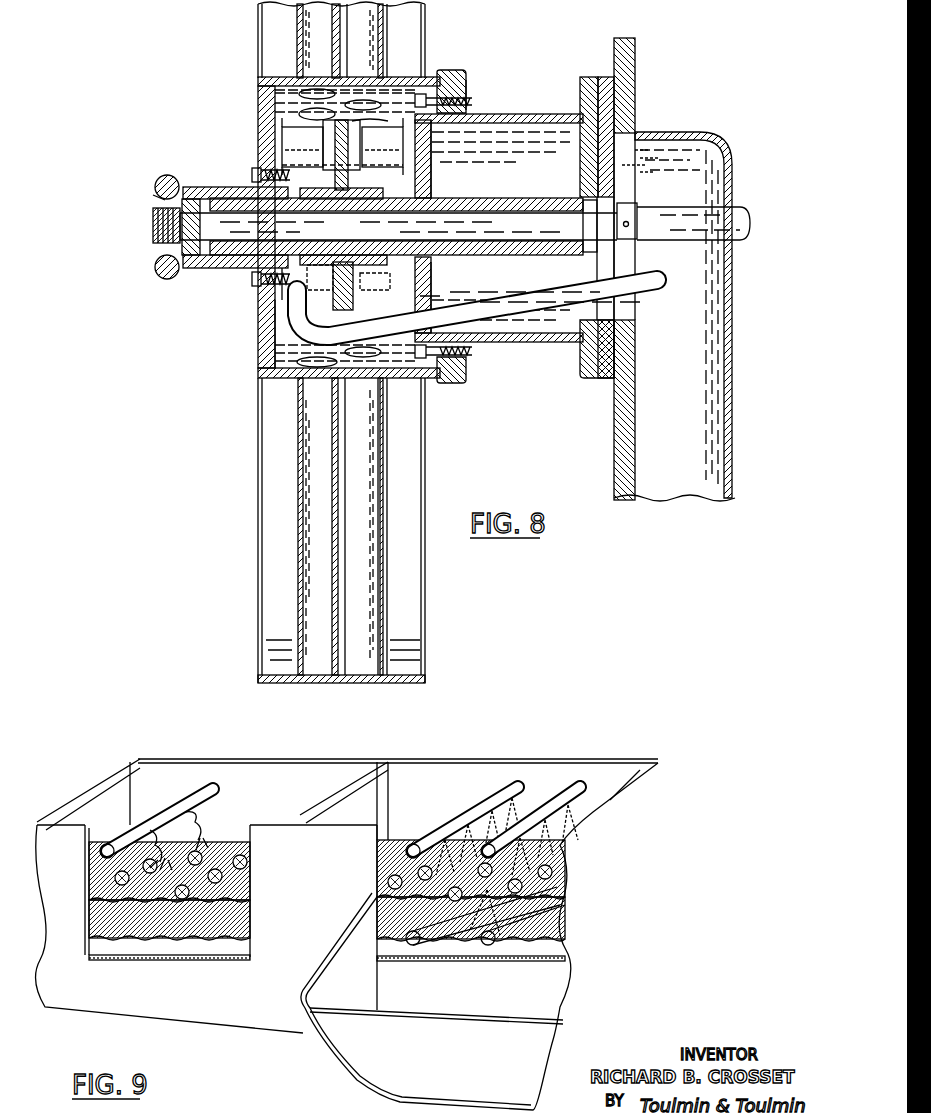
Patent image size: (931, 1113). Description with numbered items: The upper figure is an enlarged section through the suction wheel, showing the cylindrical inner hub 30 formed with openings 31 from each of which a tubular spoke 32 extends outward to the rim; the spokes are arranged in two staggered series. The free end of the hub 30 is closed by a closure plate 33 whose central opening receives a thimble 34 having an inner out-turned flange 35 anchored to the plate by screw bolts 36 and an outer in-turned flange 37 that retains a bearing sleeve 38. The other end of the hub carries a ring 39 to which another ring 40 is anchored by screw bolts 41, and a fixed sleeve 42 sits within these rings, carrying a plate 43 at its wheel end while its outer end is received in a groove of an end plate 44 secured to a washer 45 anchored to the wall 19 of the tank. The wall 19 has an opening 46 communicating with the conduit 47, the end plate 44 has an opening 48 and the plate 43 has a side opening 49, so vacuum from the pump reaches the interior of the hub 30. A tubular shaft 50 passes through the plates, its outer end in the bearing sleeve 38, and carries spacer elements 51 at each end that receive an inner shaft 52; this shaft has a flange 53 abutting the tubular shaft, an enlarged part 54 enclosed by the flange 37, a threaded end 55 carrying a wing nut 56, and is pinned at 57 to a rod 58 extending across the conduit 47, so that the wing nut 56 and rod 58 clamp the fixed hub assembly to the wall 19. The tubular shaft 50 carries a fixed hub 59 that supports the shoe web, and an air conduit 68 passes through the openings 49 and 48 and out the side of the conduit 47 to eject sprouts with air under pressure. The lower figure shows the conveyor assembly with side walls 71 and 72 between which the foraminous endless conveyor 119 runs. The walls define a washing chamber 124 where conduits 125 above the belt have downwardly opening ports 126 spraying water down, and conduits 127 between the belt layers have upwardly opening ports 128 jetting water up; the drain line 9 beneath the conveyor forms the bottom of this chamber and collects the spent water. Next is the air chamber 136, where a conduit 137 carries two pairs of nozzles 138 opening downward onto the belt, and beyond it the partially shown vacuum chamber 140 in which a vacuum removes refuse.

In FIG. 8, the wall 19 is at (640, 70).
In FIG. 8, the inner hub 30 is at (420, 78).
In FIG. 8, the openings 31 is at (310, 95).
In FIG. 8, the tubular spoke 32 is at (376, 485).
In FIG. 8, the closure plate 33 is at (268, 350).
In FIG. 8, the thimble 34 is at (235, 268).
In FIG. 8, the inner out-turned flange 35 is at (280, 290).
In FIG. 8, the screw bolts 36 is at (250, 172).
In FIG. 8, the outer in-turned flange 37 is at (190, 262).
In FIG. 8, the bearing sleeve 38 is at (215, 192).
In FIG. 8, the ring 39 is at (455, 72).
In FIG. 8, the ring 40 is at (466, 92).
In FIG. 8, the screw bolts 41 is at (472, 101).
In FIG. 8, the fixed sleeve 42 is at (515, 115).
In FIG. 8, the plate 43 is at (425, 183).
In FIG. 8, the end plate 44 is at (583, 80).
In FIG. 8, the plate or washer 45 is at (605, 355).
In FIG. 8, the opening 46 is at (634, 155).
In FIG. 8, the conduit 47 is at (705, 495).
In FIG. 8, the opening 48 is at (583, 320).
In FIG. 8, the opening 49 is at (425, 320).
In FIG. 8, the tubular shaft 50 is at (518, 205).
In FIG. 8, the spacer element 51 is at (583, 210).
In FIG. 8, the inner shaft 52 is at (465, 210).
In FIG. 8, the flange 53 is at (198, 195).
In FIG. 8, the enlarged part 54 is at (157, 195).
In FIG. 8, the threaded end 55 is at (155, 220).
In FIG. 8, the wing nut 56 is at (158, 273).
In FIG. 8, the pin 57 is at (640, 210).
In FIG. 8, the rod 58 is at (688, 240).
In FIG. 8, the fixed hub 59 is at (366, 197).
In FIG. 8, the conduit 68 is at (530, 278).
In FIG. 9, the drain line 9 is at (348, 1050).
In FIG. 9, the side wall 71 is at (296, 912).
In FIG. 9, the side wall 72 is at (472, 763).
In FIG. 9, the endless conveyor 119 is at (222, 938).
In FIG. 9, the washing chamber 124 is at (620, 778).
In FIG. 9, the conduits 125 is at (575, 790).
In FIG. 9, the downwardly opening ports 126 is at (480, 825).
In FIG. 9, the conduits 127 is at (486, 945).
In FIG. 9, the upwardly opening ports 128 is at (505, 927).
In FIG. 9, the air chamber 136 is at (320, 775).
In FIG. 9, the conduit 137 is at (218, 798).
In FIG. 9, the nozzles 138 is at (208, 832).
In FIG. 9, the vacuum chamber 140 is at (120, 780).